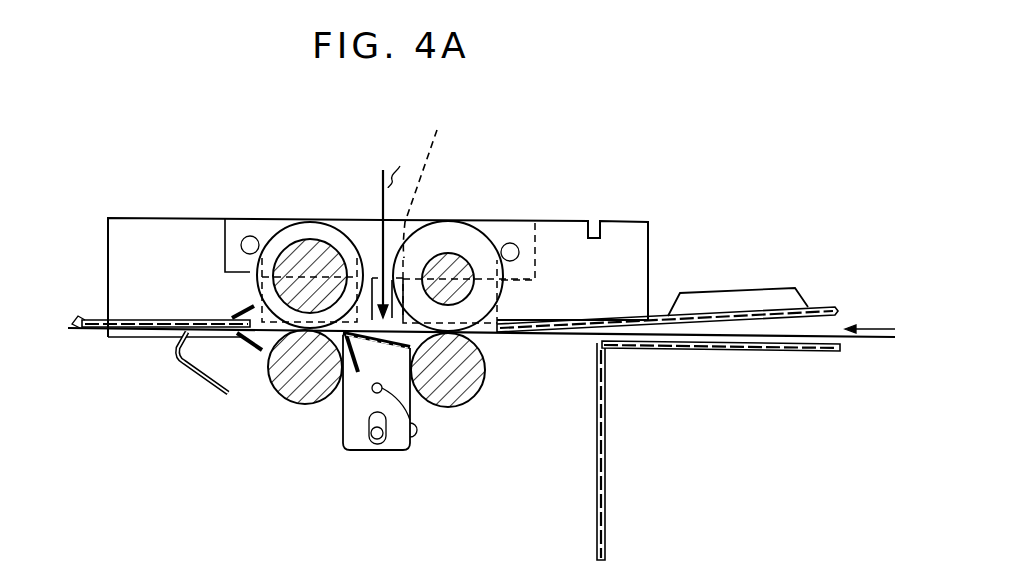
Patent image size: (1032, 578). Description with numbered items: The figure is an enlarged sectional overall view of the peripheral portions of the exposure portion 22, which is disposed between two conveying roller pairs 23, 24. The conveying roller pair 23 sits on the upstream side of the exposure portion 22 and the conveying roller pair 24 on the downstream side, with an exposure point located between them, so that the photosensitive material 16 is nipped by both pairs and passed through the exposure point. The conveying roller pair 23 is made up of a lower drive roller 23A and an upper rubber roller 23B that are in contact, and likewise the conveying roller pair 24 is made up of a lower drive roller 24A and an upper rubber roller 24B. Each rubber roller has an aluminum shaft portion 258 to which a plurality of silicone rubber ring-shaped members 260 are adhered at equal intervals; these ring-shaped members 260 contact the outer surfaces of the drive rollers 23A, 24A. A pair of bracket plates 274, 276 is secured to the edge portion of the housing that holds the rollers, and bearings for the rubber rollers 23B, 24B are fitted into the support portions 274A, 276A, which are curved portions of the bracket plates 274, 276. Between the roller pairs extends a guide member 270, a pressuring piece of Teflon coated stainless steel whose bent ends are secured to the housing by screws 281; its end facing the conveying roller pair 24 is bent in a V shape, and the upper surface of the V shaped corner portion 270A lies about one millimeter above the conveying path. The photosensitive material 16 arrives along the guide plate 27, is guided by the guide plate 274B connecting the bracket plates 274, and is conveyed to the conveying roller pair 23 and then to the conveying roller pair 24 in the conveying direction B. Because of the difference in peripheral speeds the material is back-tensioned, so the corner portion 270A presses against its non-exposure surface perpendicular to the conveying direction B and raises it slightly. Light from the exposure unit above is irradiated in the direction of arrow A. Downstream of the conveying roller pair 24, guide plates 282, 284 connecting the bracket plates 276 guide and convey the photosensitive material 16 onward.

The photosensitive material 16 is at (872, 350).
The exposure portion 22 is at (372, 222).
The conveying roller pair 23 is at (480, 222).
The drive roller 23A is at (456, 404).
The rubber roller 23B is at (494, 223).
The conveying roller pair 24 is at (258, 210).
The drive roller 24A is at (279, 398).
The rubber roller 24B is at (300, 221).
The guide plate 27 is at (708, 350).
The shaft portion 258 is at (260, 294).
The ring-shaped member 260 is at (228, 262).
The guide member 270 is at (321, 445).
The corner portion 270A is at (328, 330).
The bracket plate 274 is at (631, 220).
The support portion 274A is at (441, 180).
The guide plate 274B is at (674, 309).
The bracket plate 276 is at (160, 218).
The support portion 276A is at (338, 224).
The screw 281 is at (375, 448).
The guide plate 282 is at (162, 317).
The guide plate 284 is at (203, 378).
The direction of light irradiation A is at (402, 163).
The conveying direction B is at (874, 326).